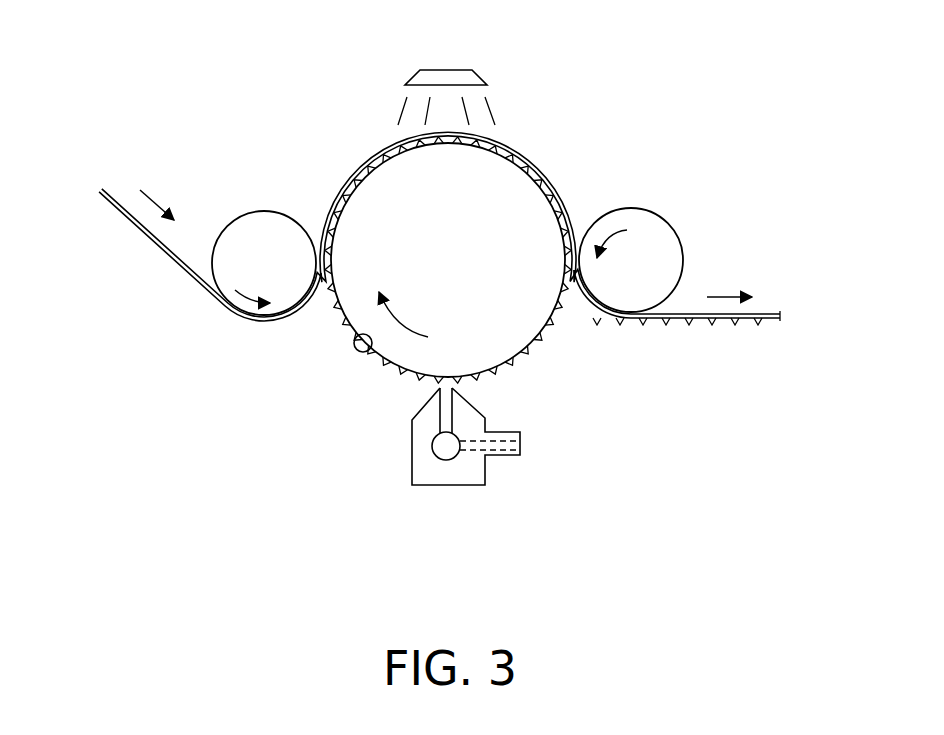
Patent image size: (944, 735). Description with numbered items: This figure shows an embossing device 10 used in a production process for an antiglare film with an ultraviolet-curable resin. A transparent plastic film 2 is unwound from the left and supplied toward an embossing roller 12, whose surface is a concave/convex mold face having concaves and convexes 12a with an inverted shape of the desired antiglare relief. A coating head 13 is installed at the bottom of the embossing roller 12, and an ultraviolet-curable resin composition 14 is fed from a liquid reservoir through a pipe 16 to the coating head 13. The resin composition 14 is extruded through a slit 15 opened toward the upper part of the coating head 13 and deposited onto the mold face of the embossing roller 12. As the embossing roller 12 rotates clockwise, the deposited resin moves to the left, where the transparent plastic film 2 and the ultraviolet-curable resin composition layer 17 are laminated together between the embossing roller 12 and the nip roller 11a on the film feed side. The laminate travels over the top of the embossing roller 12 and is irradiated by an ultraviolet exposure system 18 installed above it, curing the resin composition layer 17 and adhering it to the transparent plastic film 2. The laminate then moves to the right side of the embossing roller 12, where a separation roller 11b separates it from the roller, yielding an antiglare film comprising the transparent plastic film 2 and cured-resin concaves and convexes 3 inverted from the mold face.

The transparent plastic film 2 is at (157, 248).
The concaves and convexes 3 is at (733, 325).
The embossing device 10 is at (553, 99).
The nip roller 11a is at (250, 232).
The separation roller 11b is at (650, 238).
The embossing roller 12 is at (495, 217).
The concaves and convexes 12a is at (367, 357).
The coating head 13 is at (448, 477).
The ultraviolet-curable resin composition 14 is at (452, 452).
The slit 15 is at (453, 413).
The pipe 16 is at (520, 438).
The ultraviolet-curable resin composition layer 17 is at (403, 380).
The ultraviolet exposure system 18 is at (442, 73).